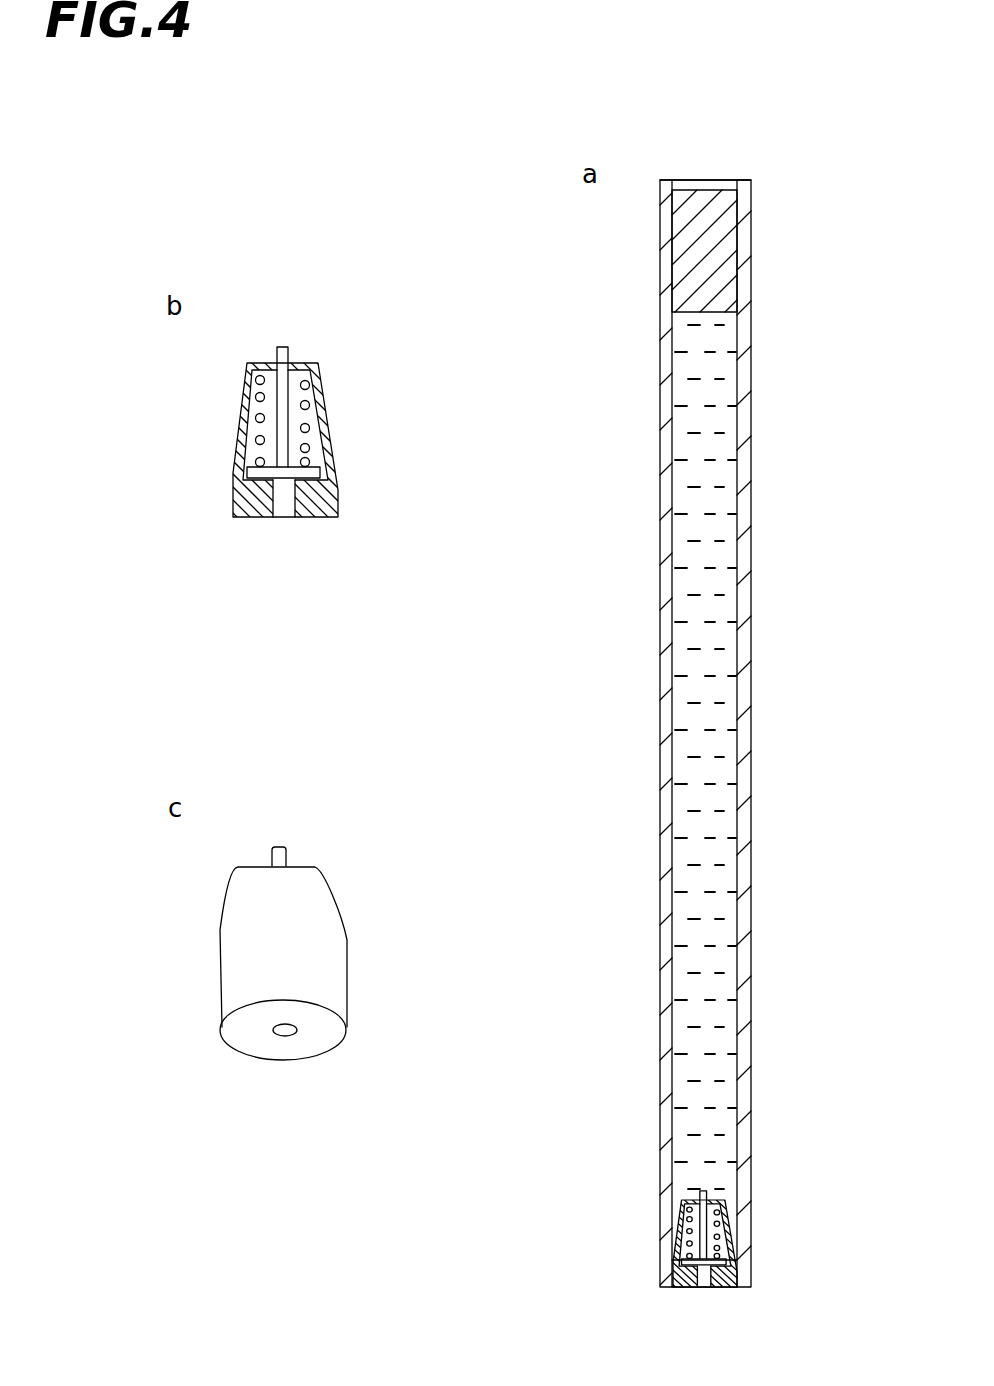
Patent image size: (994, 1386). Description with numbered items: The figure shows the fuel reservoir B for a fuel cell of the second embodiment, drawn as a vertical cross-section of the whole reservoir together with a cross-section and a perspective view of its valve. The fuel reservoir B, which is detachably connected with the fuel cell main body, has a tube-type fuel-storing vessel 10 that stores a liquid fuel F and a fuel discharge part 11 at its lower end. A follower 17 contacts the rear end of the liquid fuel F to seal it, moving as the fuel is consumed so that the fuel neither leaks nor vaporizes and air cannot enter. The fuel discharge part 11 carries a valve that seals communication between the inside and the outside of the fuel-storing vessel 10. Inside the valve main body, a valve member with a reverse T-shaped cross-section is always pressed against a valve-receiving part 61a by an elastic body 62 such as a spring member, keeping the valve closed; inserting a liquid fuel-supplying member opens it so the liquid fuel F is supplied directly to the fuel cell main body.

The fuel-storing vessel 10 is at (747, 687).
The fuel discharge part 11 is at (758, 1230).
The follower 17 is at (702, 217).
The valve-receiving part 61a is at (337, 485).
The elastic body 62 is at (310, 428).
The fuel reservoir B is at (768, 213).
The liquid fuel F is at (715, 607).